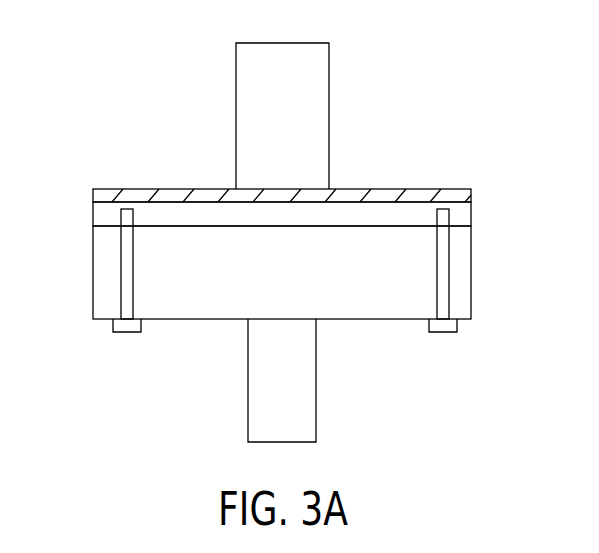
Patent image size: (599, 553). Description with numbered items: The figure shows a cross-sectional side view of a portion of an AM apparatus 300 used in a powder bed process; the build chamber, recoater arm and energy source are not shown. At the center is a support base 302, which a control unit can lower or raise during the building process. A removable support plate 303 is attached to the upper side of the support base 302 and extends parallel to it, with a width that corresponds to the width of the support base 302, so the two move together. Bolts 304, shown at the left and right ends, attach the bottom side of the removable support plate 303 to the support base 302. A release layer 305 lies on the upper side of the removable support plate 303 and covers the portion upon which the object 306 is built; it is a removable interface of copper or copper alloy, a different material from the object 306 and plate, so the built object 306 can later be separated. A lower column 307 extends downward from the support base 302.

The AM apparatus 300 is at (105, 87).
The support base 302 is at (460, 290).
The removable support plate 303 is at (460, 213).
The bolts 304 is at (130, 323).
The release layer 305 is at (388, 195).
The object 306 is at (315, 71).
The lower column 307 is at (294, 409).